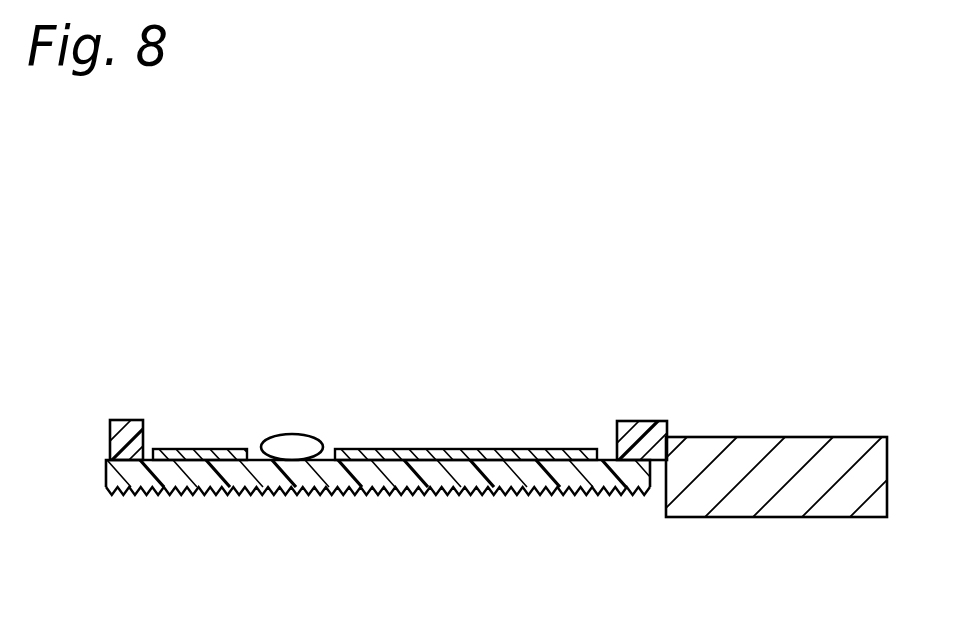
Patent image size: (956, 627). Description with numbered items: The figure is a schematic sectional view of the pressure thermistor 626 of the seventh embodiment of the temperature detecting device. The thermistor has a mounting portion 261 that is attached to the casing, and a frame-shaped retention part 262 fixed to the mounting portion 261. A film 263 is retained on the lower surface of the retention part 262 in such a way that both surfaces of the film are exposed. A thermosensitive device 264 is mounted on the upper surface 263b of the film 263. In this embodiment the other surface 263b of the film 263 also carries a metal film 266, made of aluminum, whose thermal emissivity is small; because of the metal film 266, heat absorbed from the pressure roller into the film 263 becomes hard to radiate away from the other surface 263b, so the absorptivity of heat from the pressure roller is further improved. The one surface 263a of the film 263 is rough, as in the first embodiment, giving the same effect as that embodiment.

The mounting portion 261 is at (778, 448).
The retention part 262 is at (120, 418).
The film 263 is at (390, 472).
The one surface of the film 263a is at (205, 493).
The other surface of the film 263b is at (198, 449).
The thermosensitive device 264 is at (292, 447).
The metal film 266 is at (395, 449).
The pressure thermistor 626 is at (585, 392).